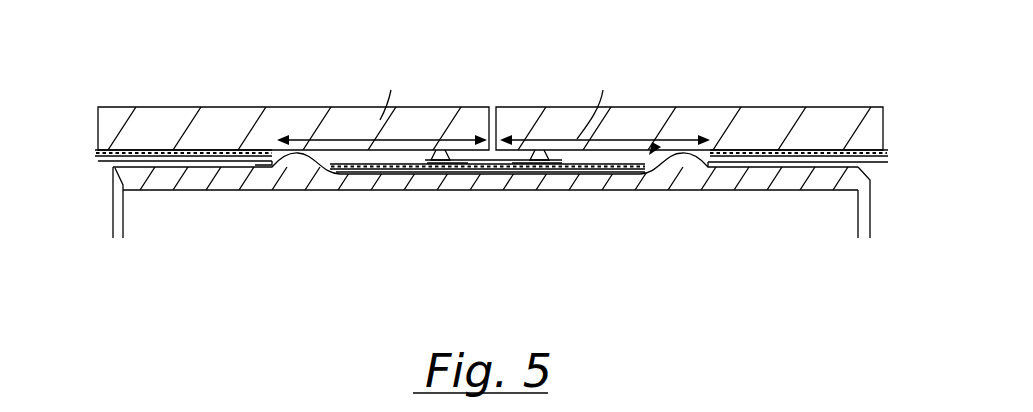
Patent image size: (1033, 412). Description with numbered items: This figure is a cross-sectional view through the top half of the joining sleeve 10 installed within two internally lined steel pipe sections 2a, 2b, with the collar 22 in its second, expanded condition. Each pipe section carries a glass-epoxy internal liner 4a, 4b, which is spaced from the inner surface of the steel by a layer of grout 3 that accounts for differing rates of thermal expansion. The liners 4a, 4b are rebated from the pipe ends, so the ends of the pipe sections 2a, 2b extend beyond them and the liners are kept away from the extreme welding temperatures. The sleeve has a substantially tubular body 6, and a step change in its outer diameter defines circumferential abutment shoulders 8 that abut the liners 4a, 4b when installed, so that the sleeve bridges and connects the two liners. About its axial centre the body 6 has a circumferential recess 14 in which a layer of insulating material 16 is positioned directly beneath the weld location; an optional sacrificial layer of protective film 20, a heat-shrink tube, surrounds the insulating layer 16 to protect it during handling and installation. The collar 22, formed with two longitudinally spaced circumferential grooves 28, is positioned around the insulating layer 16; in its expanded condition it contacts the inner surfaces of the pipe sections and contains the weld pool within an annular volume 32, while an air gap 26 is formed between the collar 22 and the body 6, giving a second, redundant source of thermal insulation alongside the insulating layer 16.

The joining sleeve 10 is at (203, 251).
The first internally lined steel pipe section 2a is at (360, 120).
The second internally lined steel pipe section 2b is at (632, 122).
The layer of grout 3 is at (205, 148).
The first glass-epoxy internal liner 4a is at (97, 162).
The second glass-epoxy internal liner 4b is at (878, 159).
The air gap 26 is at (448, 166).
The layer of protective film 20 is at (523, 172).
The layer of insulating material 16 is at (585, 180).
The tubular body 6 is at (662, 180).
The circumferential abutment shoulders 8 is at (285, 160).
The grooves 28 is at (432, 152).
The annular volume 32 is at (460, 162).
The collar 22 is at (521, 152).
The circumferential recess 14 is at (652, 150).